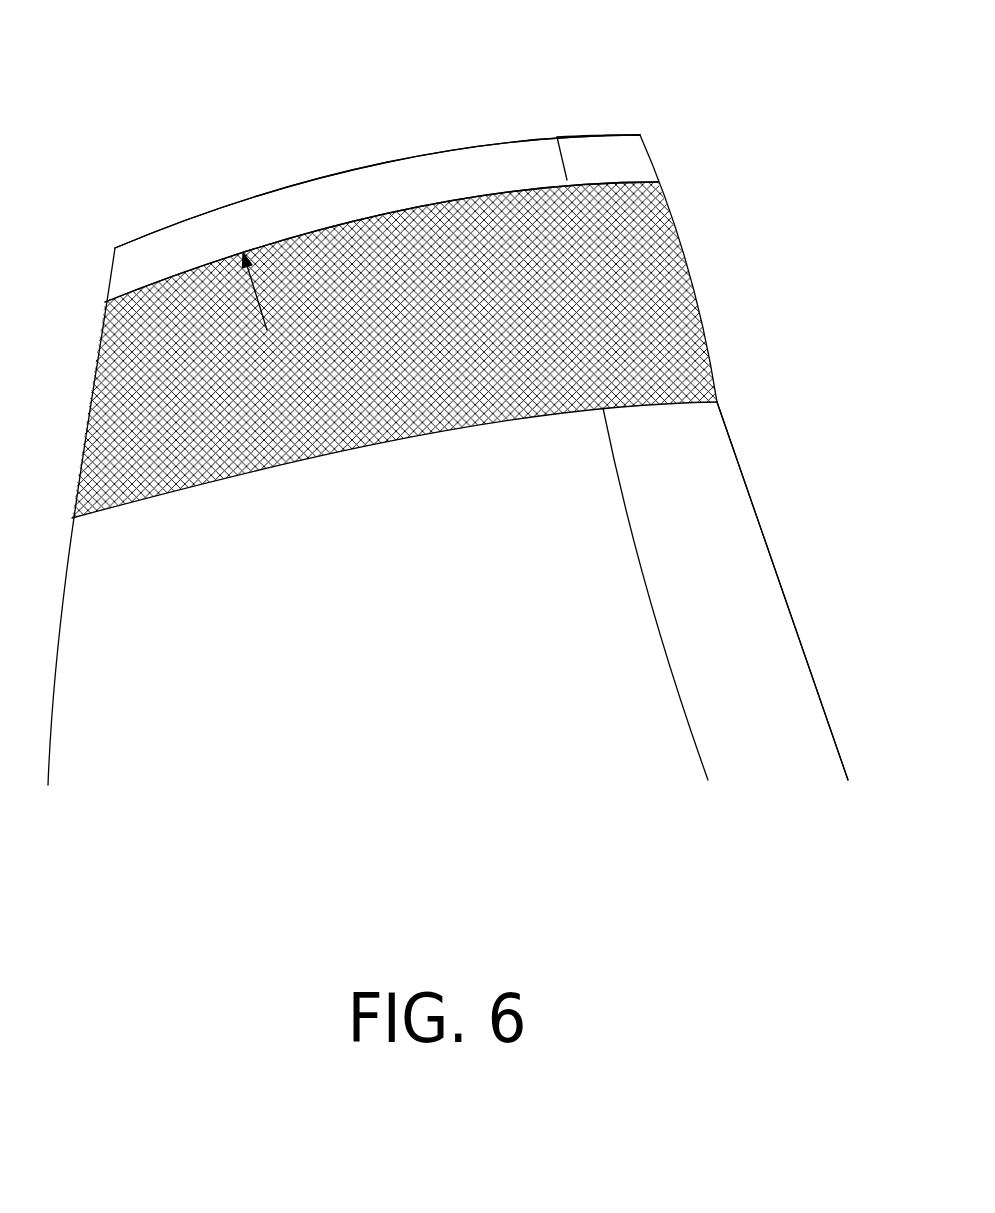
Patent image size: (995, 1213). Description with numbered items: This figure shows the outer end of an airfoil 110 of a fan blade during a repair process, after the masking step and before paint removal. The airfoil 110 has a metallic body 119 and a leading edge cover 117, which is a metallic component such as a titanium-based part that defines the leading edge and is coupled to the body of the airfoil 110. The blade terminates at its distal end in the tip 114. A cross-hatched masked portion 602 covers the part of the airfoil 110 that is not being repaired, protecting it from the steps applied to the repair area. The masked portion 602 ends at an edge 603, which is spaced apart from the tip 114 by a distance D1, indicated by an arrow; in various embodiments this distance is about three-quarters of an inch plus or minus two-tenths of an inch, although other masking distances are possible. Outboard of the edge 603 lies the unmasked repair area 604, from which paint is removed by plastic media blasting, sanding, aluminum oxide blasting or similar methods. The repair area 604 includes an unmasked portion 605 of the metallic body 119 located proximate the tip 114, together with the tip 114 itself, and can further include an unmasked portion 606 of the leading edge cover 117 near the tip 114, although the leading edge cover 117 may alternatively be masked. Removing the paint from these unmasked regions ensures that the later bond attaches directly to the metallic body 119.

The airfoil 110 is at (397, 691).
The tip 114 is at (355, 167).
The leading edge cover 117 is at (713, 537).
The metallic body 119 is at (267, 222).
The masked portion 602 is at (358, 417).
The edge of the masked portion 603 is at (425, 200).
The repair area 604 is at (523, 172).
The unmasked portion of the metallic body 605 is at (313, 210).
The unmasked portion of the leading edge cover 606 is at (625, 166).
The distance D1 is at (227, 207).